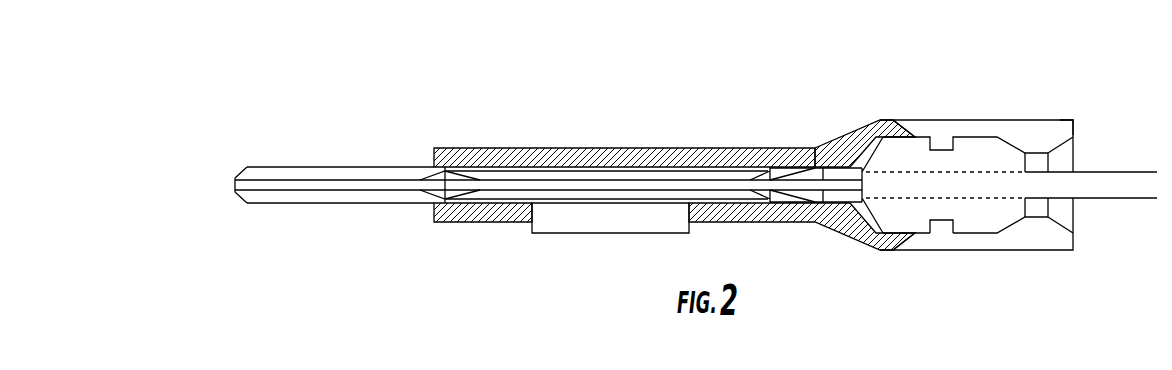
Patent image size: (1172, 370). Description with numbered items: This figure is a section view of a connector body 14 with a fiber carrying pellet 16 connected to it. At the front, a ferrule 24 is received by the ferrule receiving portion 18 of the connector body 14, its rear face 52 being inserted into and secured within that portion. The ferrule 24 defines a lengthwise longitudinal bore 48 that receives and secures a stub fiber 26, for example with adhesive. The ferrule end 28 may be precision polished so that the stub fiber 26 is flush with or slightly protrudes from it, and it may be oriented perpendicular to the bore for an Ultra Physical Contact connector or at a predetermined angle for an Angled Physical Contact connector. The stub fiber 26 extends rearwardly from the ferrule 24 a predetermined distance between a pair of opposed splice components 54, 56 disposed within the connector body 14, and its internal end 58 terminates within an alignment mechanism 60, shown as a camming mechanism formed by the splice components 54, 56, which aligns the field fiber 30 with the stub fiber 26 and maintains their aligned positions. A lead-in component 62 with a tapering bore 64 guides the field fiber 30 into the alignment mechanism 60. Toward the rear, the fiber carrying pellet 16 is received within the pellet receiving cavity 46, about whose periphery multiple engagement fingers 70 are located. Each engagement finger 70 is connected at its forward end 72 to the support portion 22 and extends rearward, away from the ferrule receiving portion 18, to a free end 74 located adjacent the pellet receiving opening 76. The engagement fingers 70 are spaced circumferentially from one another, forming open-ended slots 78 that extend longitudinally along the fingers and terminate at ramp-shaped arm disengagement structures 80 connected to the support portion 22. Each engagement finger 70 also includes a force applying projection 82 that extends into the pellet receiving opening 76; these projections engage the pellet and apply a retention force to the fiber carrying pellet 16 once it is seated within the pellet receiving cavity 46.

The connector body 14 is at (624, 133).
The fiber carrying pellet 16 is at (978, 119).
The ferrule receiving portion 18 is at (455, 146).
The support portion 22 is at (858, 126).
The ferrule 24 is at (327, 205).
The stub fiber 26 is at (261, 183).
The ferrule end 28 is at (238, 200).
The field fiber 30 is at (838, 204).
The pellet receiving cavity 46 is at (937, 231).
The longitudinal bore 48 is at (355, 187).
The rear face 52 is at (460, 203).
The splice component 54 is at (540, 173).
The splice component 56 is at (576, 196).
The internal end 58 is at (604, 185).
The alignment mechanism 60 is at (638, 160).
The lead-in component 62 is at (788, 168).
The tapering bore 64 is at (812, 168).
The engagement finger 70 is at (1008, 120).
The forward end 72 is at (897, 118).
The free end 74 is at (1075, 122).
The pellet receiving opening 76 is at (1076, 207).
The open-ended slot 78 is at (1038, 118).
The arm disengagement structure 80 is at (914, 136).
The force applying projection 82 is at (1057, 158).